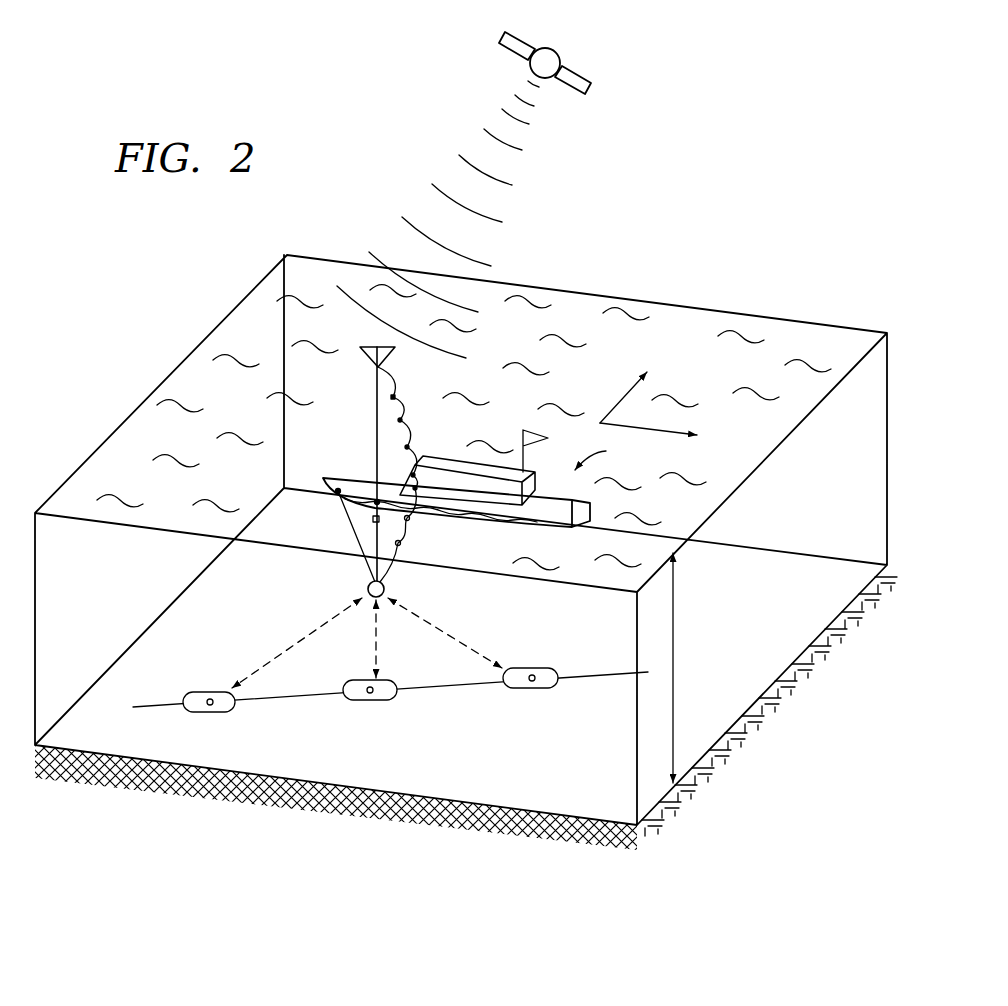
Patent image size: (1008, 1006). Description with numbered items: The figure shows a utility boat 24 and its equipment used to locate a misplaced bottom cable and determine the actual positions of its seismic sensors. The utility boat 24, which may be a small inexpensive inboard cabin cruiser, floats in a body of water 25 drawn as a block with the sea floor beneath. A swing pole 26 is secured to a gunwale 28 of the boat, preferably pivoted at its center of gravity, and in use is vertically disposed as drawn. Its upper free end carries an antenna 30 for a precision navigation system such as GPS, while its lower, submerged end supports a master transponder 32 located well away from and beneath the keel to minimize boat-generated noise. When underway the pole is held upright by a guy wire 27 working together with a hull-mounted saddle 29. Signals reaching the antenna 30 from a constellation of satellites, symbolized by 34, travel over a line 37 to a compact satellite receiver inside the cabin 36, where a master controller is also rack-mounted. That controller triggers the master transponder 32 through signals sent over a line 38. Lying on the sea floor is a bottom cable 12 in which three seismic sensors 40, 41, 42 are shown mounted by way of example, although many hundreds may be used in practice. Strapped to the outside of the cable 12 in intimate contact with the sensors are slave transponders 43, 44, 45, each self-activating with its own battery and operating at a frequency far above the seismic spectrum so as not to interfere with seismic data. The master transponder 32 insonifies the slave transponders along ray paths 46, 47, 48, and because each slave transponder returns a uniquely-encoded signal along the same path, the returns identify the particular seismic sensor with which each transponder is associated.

The bottom cable 12 is at (451, 688).
The utility boat 24 is at (606, 456).
The body of water 25 is at (619, 633).
The swing pole 26 is at (375, 425).
The guy wire 27 is at (336, 493).
The gunwale 28 is at (352, 478).
The hull-mounted saddle 29 is at (371, 520).
The antenna 30 is at (361, 362).
The master transponder 32 is at (368, 583).
The constellation of satellites 34 is at (560, 51).
The cabin 36 is at (452, 460).
The line 37 is at (394, 378).
The line 38 is at (403, 544).
The seismic sensor 40 is at (205, 691).
The seismic sensor 41 is at (358, 680).
The seismic sensor 42 is at (541, 667).
The slave transponder 43 is at (211, 705).
The slave transponder 44 is at (371, 694).
The slave transponder 45 is at (532, 682).
The ray path 46 is at (297, 640).
The ray path 47 is at (377, 650).
The ray path 48 is at (456, 635).